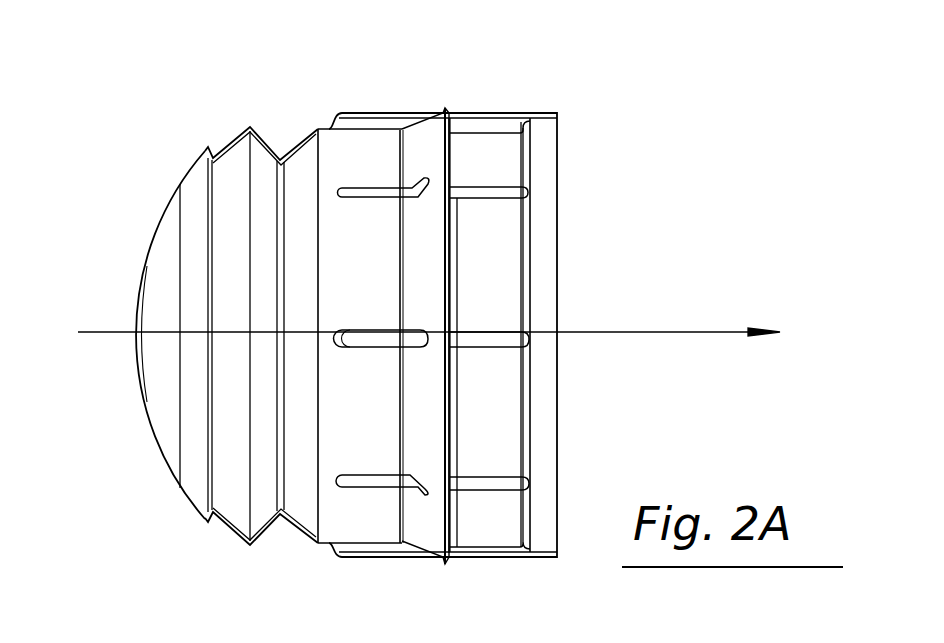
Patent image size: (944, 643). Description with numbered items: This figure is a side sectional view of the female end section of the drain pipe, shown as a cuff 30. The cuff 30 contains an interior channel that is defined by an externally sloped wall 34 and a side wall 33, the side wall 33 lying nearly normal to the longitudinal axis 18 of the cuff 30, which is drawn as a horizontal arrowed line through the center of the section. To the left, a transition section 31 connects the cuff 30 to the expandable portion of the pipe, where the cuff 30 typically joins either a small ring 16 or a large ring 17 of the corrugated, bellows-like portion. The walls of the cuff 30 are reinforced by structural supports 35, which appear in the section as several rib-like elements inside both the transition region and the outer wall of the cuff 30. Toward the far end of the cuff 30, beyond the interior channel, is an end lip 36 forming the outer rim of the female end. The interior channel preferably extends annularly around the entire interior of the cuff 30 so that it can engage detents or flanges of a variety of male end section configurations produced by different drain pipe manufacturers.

The small ring 16 is at (280, 522).
The large ring 17 is at (248, 553).
The longitudinal axis 18 is at (105, 332).
The cuff 30 is at (427, 333).
The transition section 31 is at (313, 127).
The side wall 33 is at (448, 145).
The externally sloped wall 34 is at (438, 110).
The structural supports 35 is at (363, 330).
The end lip 36 is at (547, 140).